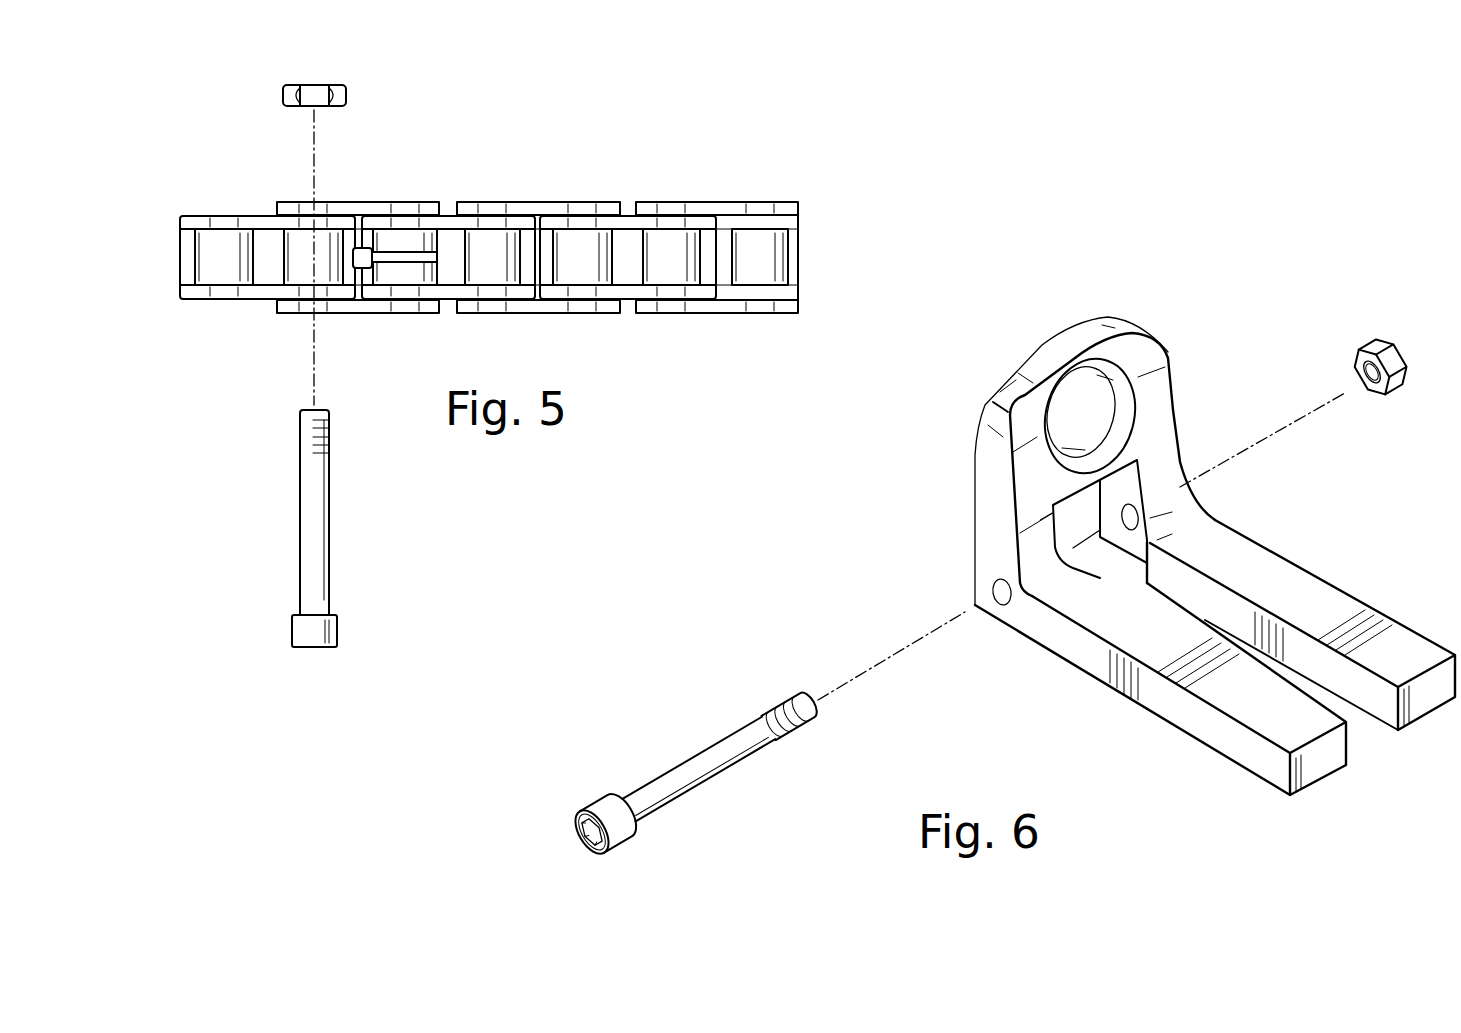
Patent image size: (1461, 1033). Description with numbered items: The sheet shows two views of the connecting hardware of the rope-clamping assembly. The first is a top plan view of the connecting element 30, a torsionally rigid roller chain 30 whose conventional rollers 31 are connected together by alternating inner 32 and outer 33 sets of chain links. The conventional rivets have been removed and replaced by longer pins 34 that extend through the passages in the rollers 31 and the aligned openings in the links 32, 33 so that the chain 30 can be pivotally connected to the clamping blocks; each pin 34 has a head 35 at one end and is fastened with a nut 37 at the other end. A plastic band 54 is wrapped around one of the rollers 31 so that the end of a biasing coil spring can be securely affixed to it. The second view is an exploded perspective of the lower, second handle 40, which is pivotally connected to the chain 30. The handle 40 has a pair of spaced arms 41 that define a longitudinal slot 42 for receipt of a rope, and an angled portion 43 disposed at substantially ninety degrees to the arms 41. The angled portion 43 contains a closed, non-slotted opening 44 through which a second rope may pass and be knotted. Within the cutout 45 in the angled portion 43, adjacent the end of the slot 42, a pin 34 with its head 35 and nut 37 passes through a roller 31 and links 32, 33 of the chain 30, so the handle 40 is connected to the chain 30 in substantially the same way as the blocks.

In FIG. 5, the connecting element 30 is at (483, 227).
In FIG. 5, the rollers 31 is at (403, 237).
In FIG. 5, the inner set of chain links 32 is at (243, 222).
In FIG. 5, the outer set of chain links 33 is at (353, 210).
In FIG. 5, the pins 34 is at (278, 543).
In FIG. 6, the pins 34 is at (697, 775).
In FIG. 5, the head 35 is at (310, 630).
In FIG. 6, the head 35 is at (613, 837).
In FIG. 5, the nut 37 is at (283, 93).
In FIG. 6, the nut 37 is at (1402, 372).
In FIG. 5, the plastic band 54 is at (400, 262).
In FIG. 6, the second handle 40 is at (1199, 525).
In FIG. 6, the arms 41 is at (1298, 588).
In FIG. 6, the longitudinal slot 42 is at (1368, 738).
In FIG. 6, the angled portion 43 is at (1006, 408).
In FIG. 6, the closed opening 44 is at (1107, 405).
In FIG. 6, the cutout 45 is at (1140, 458).